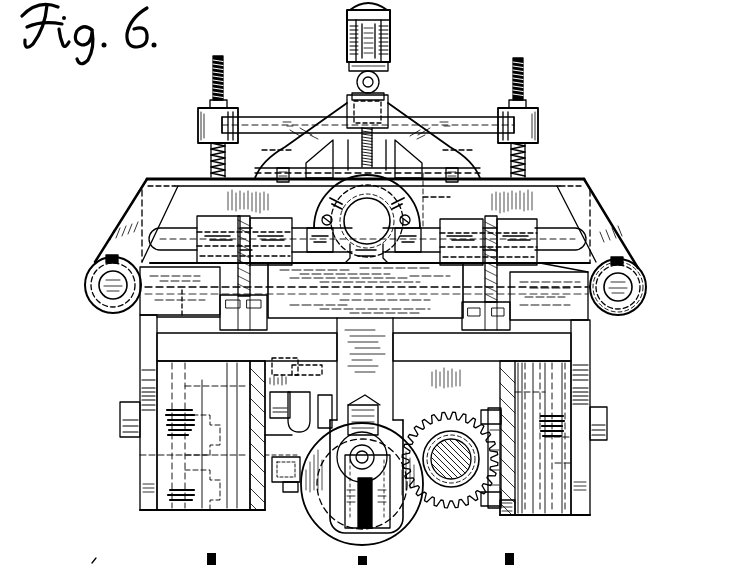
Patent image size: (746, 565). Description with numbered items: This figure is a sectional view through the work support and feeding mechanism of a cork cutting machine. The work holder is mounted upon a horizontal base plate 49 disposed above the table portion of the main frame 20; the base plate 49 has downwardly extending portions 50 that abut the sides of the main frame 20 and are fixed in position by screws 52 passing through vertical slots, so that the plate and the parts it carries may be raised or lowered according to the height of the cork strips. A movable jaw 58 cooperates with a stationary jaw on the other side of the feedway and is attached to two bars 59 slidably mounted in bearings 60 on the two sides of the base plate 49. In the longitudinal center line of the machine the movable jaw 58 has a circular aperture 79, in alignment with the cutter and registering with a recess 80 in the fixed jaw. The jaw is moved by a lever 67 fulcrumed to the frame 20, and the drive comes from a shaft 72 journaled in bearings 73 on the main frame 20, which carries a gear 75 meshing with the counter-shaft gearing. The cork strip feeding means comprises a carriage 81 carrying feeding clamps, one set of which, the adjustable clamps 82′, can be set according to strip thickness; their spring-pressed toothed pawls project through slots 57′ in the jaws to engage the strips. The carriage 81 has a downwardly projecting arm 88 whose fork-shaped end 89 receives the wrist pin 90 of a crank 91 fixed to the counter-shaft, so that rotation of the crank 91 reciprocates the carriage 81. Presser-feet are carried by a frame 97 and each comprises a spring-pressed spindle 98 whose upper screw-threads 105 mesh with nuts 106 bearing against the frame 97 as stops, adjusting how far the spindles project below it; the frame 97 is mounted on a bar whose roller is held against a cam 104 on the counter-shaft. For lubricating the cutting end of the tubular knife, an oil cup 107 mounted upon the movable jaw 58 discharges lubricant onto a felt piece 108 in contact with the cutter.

The oil cup 107 is at (390, 42).
The screw-threads 105 is at (525, 73).
The nuts 106 is at (528, 107).
The frame 97 is at (454, 117).
The felt piece 108 is at (452, 172).
The spring-pressed spindle 98 is at (527, 162).
The movable jaw 58 is at (560, 186).
The adjustable feeding clamps 82′ is at (212, 217).
The recess 80 is at (393, 219).
The circular aperture 79 is at (367, 221).
The slots 57′ is at (552, 242).
The base plate 49 is at (578, 273).
The bearings 60 is at (633, 274).
The bars 59 is at (108, 284).
The carriage 81 is at (330, 305).
The downwardly projecting arm 88 is at (386, 341).
The downwardly extending portions 50 is at (590, 371).
The screws 52 is at (608, 414).
The main frame 20 is at (508, 512).
The lever 67 is at (300, 439).
The wrist pin 90 is at (369, 450).
The gear 75 is at (446, 414).
The fork-shaped end 89 is at (337, 512).
The cam 104 is at (342, 537).
The crank 91 is at (404, 512).
The shaft 72 is at (455, 478).
The bearings 73 is at (466, 490).